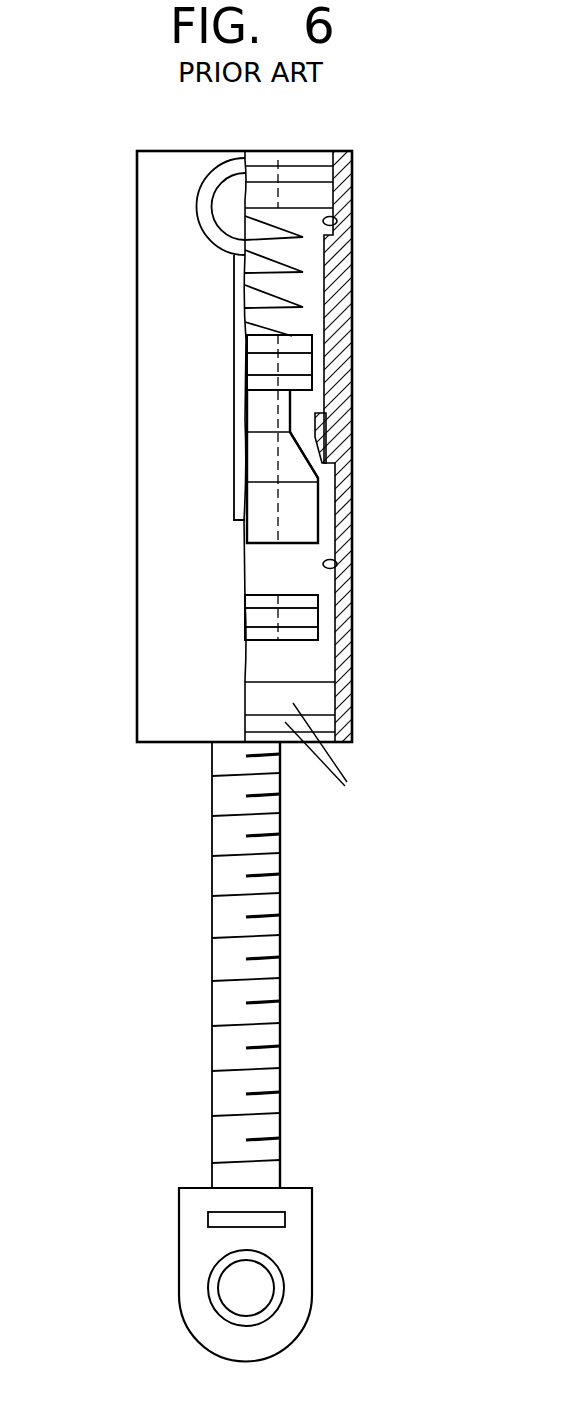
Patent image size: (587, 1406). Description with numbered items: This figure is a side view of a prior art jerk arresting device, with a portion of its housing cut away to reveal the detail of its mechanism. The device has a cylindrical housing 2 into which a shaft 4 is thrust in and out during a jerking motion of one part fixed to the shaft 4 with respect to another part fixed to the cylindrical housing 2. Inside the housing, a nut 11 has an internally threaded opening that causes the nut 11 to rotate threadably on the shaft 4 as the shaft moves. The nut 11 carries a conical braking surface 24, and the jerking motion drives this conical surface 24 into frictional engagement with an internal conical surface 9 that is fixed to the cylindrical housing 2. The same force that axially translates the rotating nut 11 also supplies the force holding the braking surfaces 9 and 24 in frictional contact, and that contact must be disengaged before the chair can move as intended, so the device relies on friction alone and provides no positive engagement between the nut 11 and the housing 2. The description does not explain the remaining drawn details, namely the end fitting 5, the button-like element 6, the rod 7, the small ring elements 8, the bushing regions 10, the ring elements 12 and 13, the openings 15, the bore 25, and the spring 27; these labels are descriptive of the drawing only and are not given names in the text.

The cylindrical housing 2 is at (158, 607).
The shaft 4 is at (223, 945).
The end fitting 5 is at (188, 1227).
The push button 6 is at (194, 207).
The plunger rod 7 is at (237, 356).
The O-ring seal 8 is at (337, 221).
The internal conical surface 9 is at (322, 455).
The bushing 10 is at (322, 194).
The nut 11 is at (302, 525).
The guide ring 12 is at (312, 345).
The seal ring 13 is at (312, 372).
The opening 15 is at (340, 749).
The conical braking surface 24 is at (312, 472).
The bore 25 is at (220, 1307).
The spring 27 is at (300, 304).